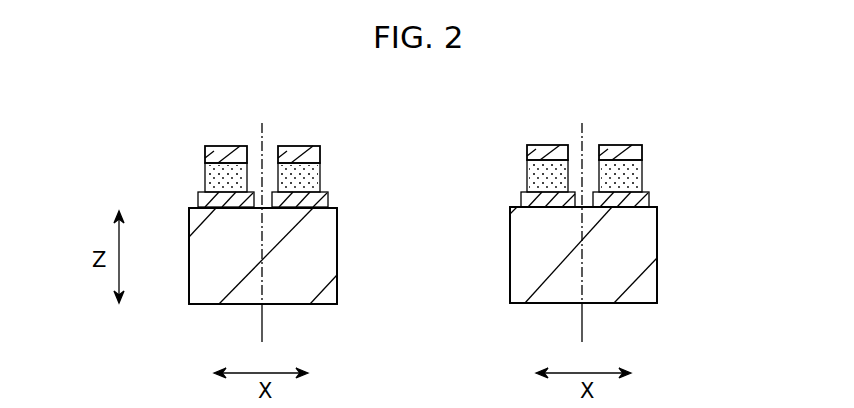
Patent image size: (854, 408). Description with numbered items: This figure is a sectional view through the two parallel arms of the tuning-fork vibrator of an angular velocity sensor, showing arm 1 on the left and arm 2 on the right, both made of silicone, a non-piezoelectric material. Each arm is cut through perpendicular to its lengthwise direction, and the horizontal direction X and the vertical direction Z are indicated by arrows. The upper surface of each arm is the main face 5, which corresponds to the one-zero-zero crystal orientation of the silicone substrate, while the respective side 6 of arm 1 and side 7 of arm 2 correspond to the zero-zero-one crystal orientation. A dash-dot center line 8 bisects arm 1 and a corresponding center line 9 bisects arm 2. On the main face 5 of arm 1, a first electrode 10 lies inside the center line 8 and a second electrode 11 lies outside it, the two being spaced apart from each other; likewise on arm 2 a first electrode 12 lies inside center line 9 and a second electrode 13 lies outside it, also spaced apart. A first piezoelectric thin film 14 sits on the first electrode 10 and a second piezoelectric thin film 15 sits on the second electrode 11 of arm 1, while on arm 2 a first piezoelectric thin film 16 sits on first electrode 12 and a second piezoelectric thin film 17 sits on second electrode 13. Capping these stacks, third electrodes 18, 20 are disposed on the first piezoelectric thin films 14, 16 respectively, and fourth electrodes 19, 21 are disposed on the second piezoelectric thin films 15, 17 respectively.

The arm 1 is at (200, 287).
The arm 2 is at (653, 280).
The main face 5 is at (333, 208).
The side 6 is at (343, 250).
The side 7 is at (662, 247).
The center line 8 is at (257, 335).
The center line 9 is at (590, 325).
The first electrode 10 is at (327, 197).
The second electrode 11 is at (200, 203).
The first electrode 12 is at (525, 203).
The second electrode 13 is at (647, 197).
The first piezoelectric thin film 14 is at (310, 173).
The second piezoelectric thin film 15 is at (210, 178).
The first piezoelectric thin film 16 is at (538, 178).
The second piezoelectric thin film 17 is at (630, 170).
The third electrode 18 is at (285, 150).
The fourth electrode 19 is at (222, 150).
The third electrode 20 is at (540, 152).
The fourth electrode 21 is at (612, 152).